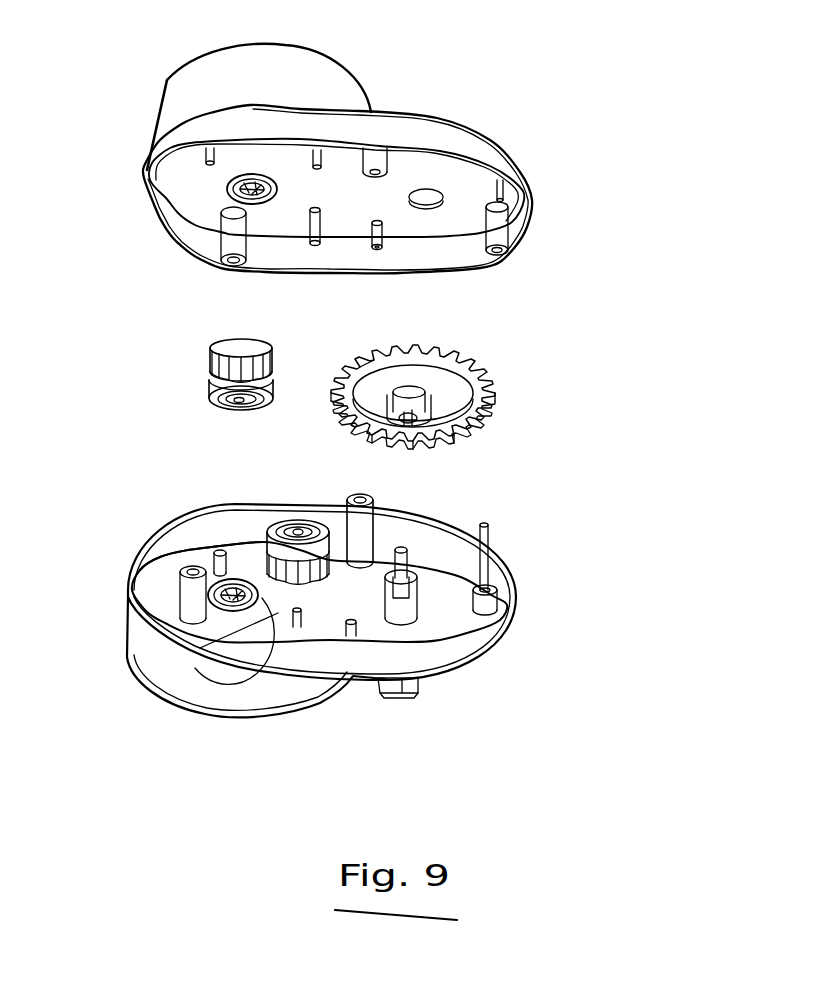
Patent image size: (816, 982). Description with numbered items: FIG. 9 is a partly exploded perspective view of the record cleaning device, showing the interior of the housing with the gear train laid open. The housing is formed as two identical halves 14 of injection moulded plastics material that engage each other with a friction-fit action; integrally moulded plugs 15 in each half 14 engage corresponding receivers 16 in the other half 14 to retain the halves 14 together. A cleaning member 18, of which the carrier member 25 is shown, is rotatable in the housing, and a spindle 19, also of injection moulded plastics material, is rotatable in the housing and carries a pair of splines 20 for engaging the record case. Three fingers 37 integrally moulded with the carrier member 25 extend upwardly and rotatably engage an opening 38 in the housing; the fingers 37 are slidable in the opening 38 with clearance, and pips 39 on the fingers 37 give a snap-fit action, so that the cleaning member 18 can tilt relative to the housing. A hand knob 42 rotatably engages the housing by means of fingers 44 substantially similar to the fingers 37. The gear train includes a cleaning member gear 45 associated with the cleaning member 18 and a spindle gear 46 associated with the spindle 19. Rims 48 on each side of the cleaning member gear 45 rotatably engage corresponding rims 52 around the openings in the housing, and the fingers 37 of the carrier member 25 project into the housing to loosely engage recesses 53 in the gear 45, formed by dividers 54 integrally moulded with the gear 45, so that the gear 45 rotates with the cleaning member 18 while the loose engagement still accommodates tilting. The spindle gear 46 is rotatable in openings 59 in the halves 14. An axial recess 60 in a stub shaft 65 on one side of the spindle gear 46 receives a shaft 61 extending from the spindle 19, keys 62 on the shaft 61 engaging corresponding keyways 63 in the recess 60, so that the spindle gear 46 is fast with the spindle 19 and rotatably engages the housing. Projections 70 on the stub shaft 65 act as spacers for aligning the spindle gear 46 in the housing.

The halves 14 is at (175, 215).
The plugs 15 is at (192, 174).
The receivers 16 is at (232, 244).
The cleaning member 18 is at (267, 690).
The spindle 19 is at (408, 622).
The splines 20 is at (405, 690).
The carrier member 25 is at (294, 525).
The fingers 37 is at (278, 613).
The opening 38 is at (240, 580).
The pips 39 is at (165, 620).
The hand knob 42 is at (322, 78).
The fingers 44 is at (253, 176).
The cleaning member gear 45 is at (215, 370).
The spindle gear 46 is at (453, 345).
The rims 48 is at (249, 337).
The rims 52 is at (263, 177).
The recesses 53 is at (238, 412).
The dividers 54 is at (208, 408).
The openings 59 is at (427, 210).
The axial recess 60 is at (480, 437).
The shaft 61 is at (403, 556).
The keys 62 is at (420, 597).
The keyways 63 is at (470, 373).
The stub shaft 65 is at (407, 393).
The projections 70 is at (362, 347).